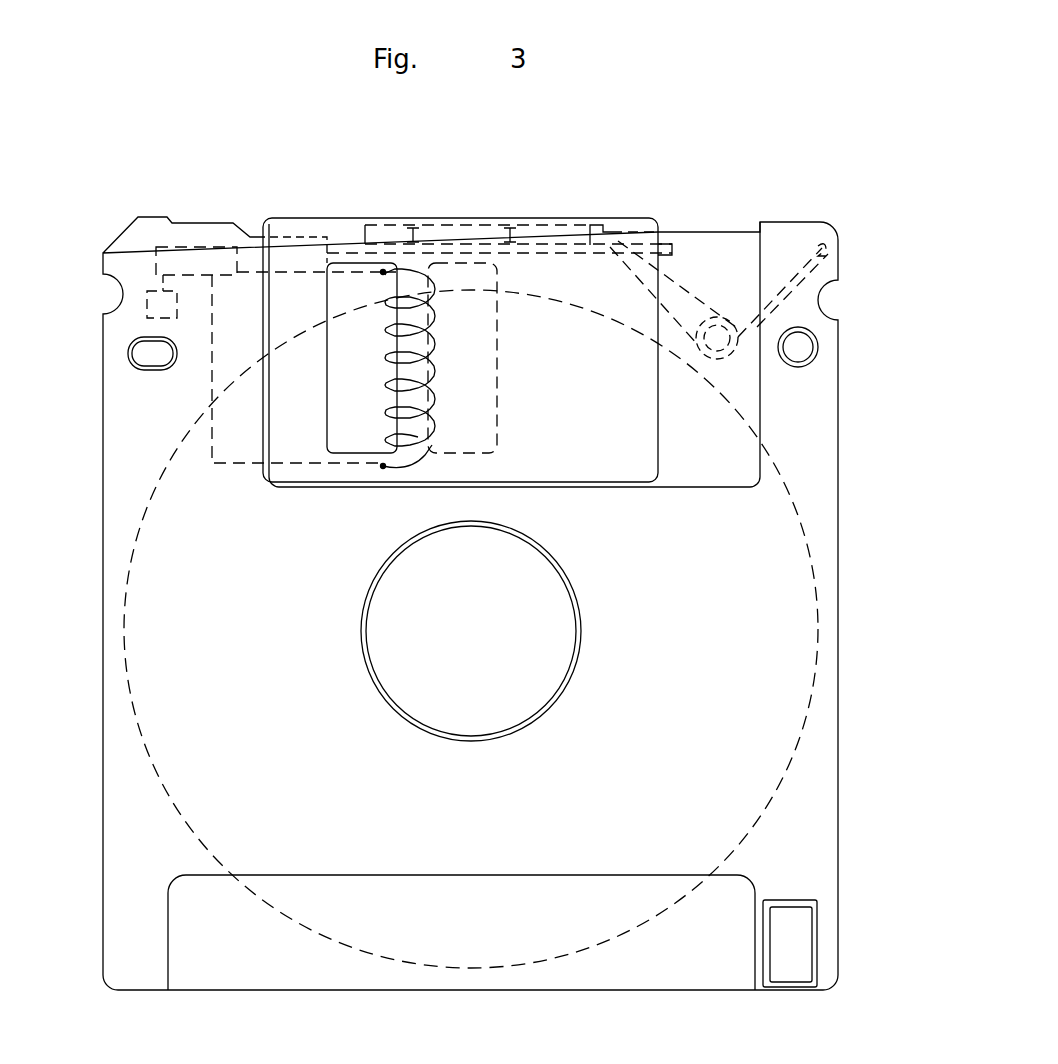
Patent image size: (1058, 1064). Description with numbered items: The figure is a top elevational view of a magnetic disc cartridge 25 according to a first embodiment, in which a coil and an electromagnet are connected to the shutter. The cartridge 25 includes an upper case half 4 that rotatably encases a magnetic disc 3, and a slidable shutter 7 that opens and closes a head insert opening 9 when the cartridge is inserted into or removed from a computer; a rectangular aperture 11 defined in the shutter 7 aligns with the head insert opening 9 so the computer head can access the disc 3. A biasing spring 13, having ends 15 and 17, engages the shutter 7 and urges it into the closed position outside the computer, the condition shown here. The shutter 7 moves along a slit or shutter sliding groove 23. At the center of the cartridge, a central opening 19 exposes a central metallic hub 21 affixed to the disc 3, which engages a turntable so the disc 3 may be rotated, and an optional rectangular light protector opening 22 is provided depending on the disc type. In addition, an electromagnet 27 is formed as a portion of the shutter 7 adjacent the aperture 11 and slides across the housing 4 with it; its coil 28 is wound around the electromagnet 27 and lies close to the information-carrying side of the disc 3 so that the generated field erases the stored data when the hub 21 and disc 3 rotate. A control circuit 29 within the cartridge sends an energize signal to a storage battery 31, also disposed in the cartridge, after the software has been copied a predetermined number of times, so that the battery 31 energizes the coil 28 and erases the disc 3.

The magnetic disc 3 is at (815, 588).
The upper case half 4 is at (838, 762).
The shutter 7 is at (618, 222).
The head insert opening 9 is at (500, 412).
The rectangular aperture 11 is at (370, 415).
The biasing spring 13 is at (783, 305).
The spring end 15 is at (838, 265).
The spring end 17 is at (675, 312).
The central opening 19 is at (577, 600).
The central metallic hub 21 is at (510, 683).
The rectangular light protector opening 22 is at (798, 930).
The shutter sliding groove 23 is at (520, 247).
The magnetic disc cartridge 25 is at (132, 200).
The electromagnet 27 is at (395, 330).
The coil 28 is at (415, 328).
The control circuit 29 is at (167, 304).
The battery 31 is at (182, 260).